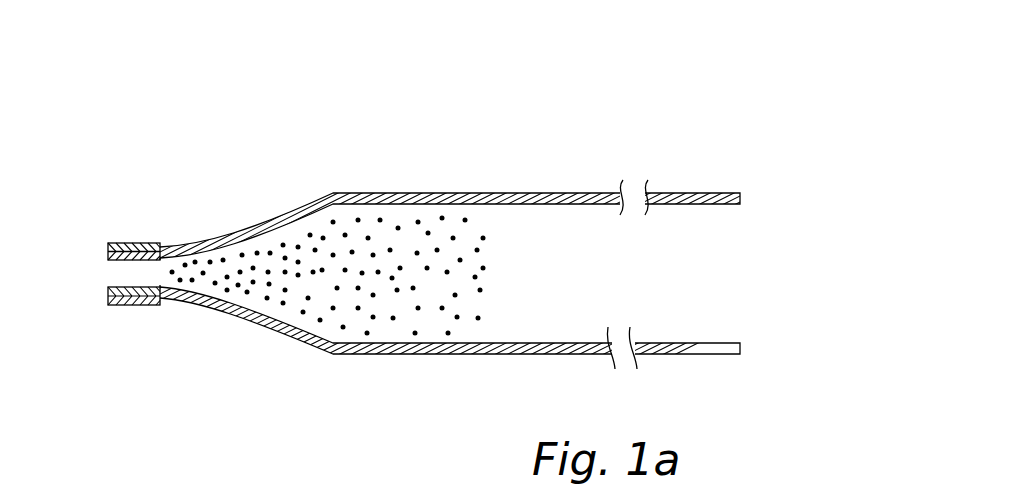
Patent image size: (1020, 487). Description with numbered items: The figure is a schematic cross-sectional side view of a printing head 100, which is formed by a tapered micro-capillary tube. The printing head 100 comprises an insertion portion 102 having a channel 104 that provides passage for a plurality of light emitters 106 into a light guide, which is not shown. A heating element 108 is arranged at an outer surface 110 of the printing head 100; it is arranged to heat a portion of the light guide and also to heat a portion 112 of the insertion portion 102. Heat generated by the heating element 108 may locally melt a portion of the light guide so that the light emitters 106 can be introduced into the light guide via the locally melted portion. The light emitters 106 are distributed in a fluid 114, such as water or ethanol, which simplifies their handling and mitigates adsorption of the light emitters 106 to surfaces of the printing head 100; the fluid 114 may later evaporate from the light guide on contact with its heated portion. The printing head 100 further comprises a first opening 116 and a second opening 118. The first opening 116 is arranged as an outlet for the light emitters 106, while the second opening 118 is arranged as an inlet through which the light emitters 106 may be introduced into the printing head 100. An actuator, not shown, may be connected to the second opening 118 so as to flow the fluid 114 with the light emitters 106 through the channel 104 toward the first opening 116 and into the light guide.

The printing head 100 is at (184, 118).
The insertion portion 102 is at (188, 226).
The channel 104 is at (219, 272).
The light emitters 106 is at (268, 255).
The heating element 108 is at (118, 250).
The outer surface 110 is at (137, 248).
The portion of the insertion portion 112 is at (116, 261).
The fluid 114 is at (409, 237).
The first opening 116 is at (133, 284).
The second opening 118 is at (720, 277).